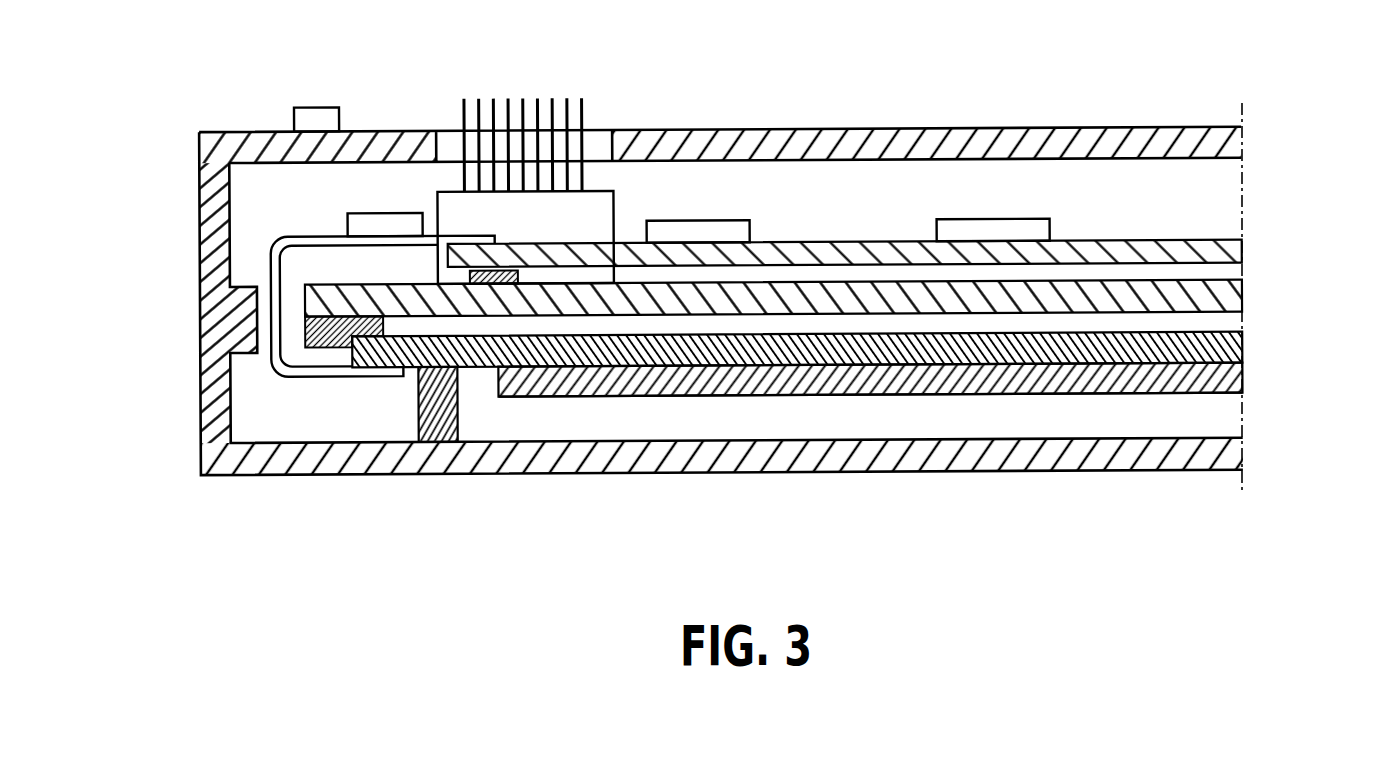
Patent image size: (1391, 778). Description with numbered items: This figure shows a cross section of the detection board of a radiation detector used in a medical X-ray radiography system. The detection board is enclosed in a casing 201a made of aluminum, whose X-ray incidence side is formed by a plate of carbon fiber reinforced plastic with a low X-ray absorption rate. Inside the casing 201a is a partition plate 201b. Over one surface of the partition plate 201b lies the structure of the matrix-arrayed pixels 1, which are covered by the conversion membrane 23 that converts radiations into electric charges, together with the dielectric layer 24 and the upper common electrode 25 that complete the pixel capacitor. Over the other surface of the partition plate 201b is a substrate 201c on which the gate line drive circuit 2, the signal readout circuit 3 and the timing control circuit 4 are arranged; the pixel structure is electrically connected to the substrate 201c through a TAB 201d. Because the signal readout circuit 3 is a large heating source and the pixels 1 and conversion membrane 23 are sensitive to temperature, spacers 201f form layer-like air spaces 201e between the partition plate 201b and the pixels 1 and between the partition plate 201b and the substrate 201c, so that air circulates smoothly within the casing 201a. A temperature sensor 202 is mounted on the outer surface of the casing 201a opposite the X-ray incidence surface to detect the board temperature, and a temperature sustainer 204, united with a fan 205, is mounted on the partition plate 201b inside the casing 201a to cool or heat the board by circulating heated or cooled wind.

The matrix-arrayed pixels 1 is at (904, 348).
The gate line drive circuit 2 is at (992, 228).
The signal readout circuit 3 is at (382, 222).
The timing control circuit 4 is at (700, 230).
The conversion membrane 23 is at (783, 390).
The dielectric layer 24 is at (783, 390).
The upper common electrode 25 is at (783, 390).
The casing 201a is at (1083, 131).
The partition plate 201b is at (1136, 298).
The substrate 201c is at (825, 243).
The TAB (Tape Automatic Bonding) 201d is at (268, 262).
The layer-like air spaces 201e is at (1220, 202).
The spacers 201f is at (527, 275).
The temperature sensor 202 is at (316, 115).
The temperature sustainer 204 is at (450, 215).
The fan 205 is at (450, 215).